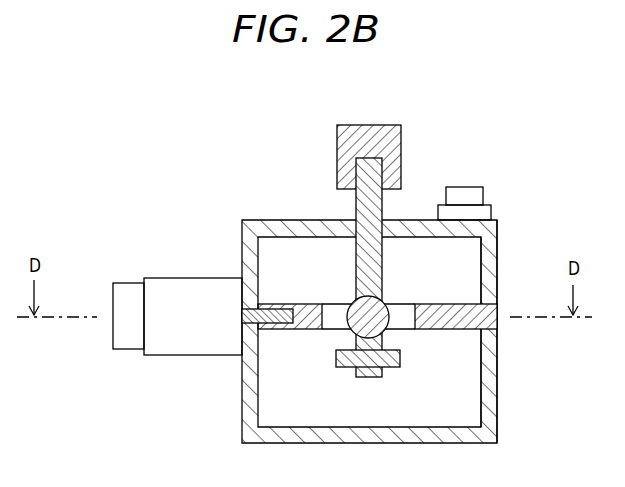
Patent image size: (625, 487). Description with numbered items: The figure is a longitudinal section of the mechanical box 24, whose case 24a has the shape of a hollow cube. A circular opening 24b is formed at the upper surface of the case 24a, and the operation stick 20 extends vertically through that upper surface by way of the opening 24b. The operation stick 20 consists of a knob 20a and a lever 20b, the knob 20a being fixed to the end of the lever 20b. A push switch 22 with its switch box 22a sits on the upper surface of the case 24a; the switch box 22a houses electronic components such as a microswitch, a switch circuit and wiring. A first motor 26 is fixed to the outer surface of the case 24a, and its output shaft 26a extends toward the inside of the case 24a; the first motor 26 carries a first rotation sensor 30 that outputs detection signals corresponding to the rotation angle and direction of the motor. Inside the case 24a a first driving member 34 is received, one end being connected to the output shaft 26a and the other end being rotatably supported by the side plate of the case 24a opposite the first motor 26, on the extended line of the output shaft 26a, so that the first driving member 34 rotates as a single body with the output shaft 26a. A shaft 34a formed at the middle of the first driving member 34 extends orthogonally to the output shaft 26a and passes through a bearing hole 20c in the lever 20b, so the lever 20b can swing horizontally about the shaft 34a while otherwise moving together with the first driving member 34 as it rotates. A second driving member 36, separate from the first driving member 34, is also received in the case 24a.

The operation stick 20 is at (379, 240).
The knob 20a is at (343, 140).
The lever 20b is at (383, 215).
The bearing hole 20c is at (386, 303).
The push switch 22 is at (467, 192).
The switch box 22a is at (485, 214).
The mechanical box 24 is at (355, 284).
The case 24a is at (492, 247).
The opening 24b is at (312, 222).
The first motor 26 is at (202, 285).
The output shaft 26a is at (275, 311).
The first rotation sensor 30 is at (128, 290).
The first driving member 34 is at (308, 334).
The shaft 34a is at (355, 303).
The second driving member 36 is at (393, 370).